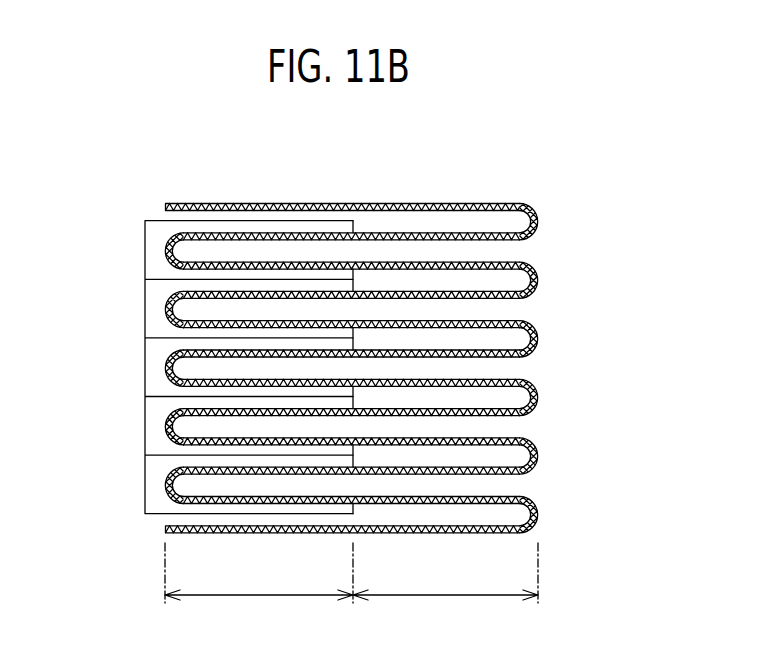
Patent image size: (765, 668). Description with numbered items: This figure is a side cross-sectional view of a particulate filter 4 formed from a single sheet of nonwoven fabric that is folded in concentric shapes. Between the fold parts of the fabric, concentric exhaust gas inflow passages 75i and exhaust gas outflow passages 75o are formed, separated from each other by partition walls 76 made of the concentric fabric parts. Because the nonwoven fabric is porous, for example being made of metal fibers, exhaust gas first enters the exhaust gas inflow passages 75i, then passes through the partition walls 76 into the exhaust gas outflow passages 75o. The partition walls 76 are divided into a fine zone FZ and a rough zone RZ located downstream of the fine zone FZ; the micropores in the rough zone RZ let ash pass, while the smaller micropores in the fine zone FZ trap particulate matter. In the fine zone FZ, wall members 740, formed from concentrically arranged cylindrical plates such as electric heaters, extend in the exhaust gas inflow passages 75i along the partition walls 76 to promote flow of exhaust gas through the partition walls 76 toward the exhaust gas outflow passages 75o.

The particulate filter 4 is at (484, 164).
The exhaust gas inflow passage 75i is at (427, 283).
The exhaust gas outflow passage 75o is at (408, 480).
The partition wall 76 is at (477, 320).
The wall member 740 is at (158, 338).
The fine zone FZ is at (259, 590).
The rough zone RZ is at (445, 591).